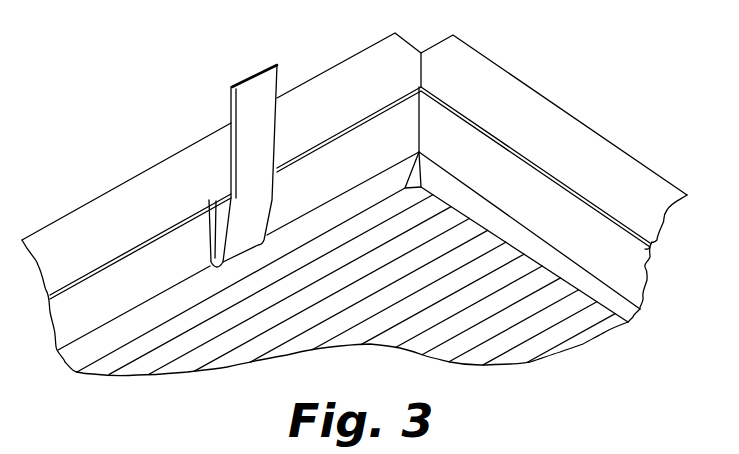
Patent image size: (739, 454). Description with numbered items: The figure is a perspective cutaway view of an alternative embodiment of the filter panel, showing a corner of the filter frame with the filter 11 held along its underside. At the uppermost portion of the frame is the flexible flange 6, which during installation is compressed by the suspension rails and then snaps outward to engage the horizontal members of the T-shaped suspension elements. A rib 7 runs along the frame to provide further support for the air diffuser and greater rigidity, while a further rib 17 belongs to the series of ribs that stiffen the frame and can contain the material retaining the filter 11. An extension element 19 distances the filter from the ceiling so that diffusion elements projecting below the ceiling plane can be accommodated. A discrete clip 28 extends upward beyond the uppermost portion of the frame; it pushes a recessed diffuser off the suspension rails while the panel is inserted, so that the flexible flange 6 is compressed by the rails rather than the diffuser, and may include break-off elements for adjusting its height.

The flexible flange 6 is at (527, 100).
The rib 7 is at (600, 175).
The filter 11 is at (517, 354).
The rib 17 is at (620, 312).
The extension element 19 is at (632, 255).
The clip 28 is at (255, 83).